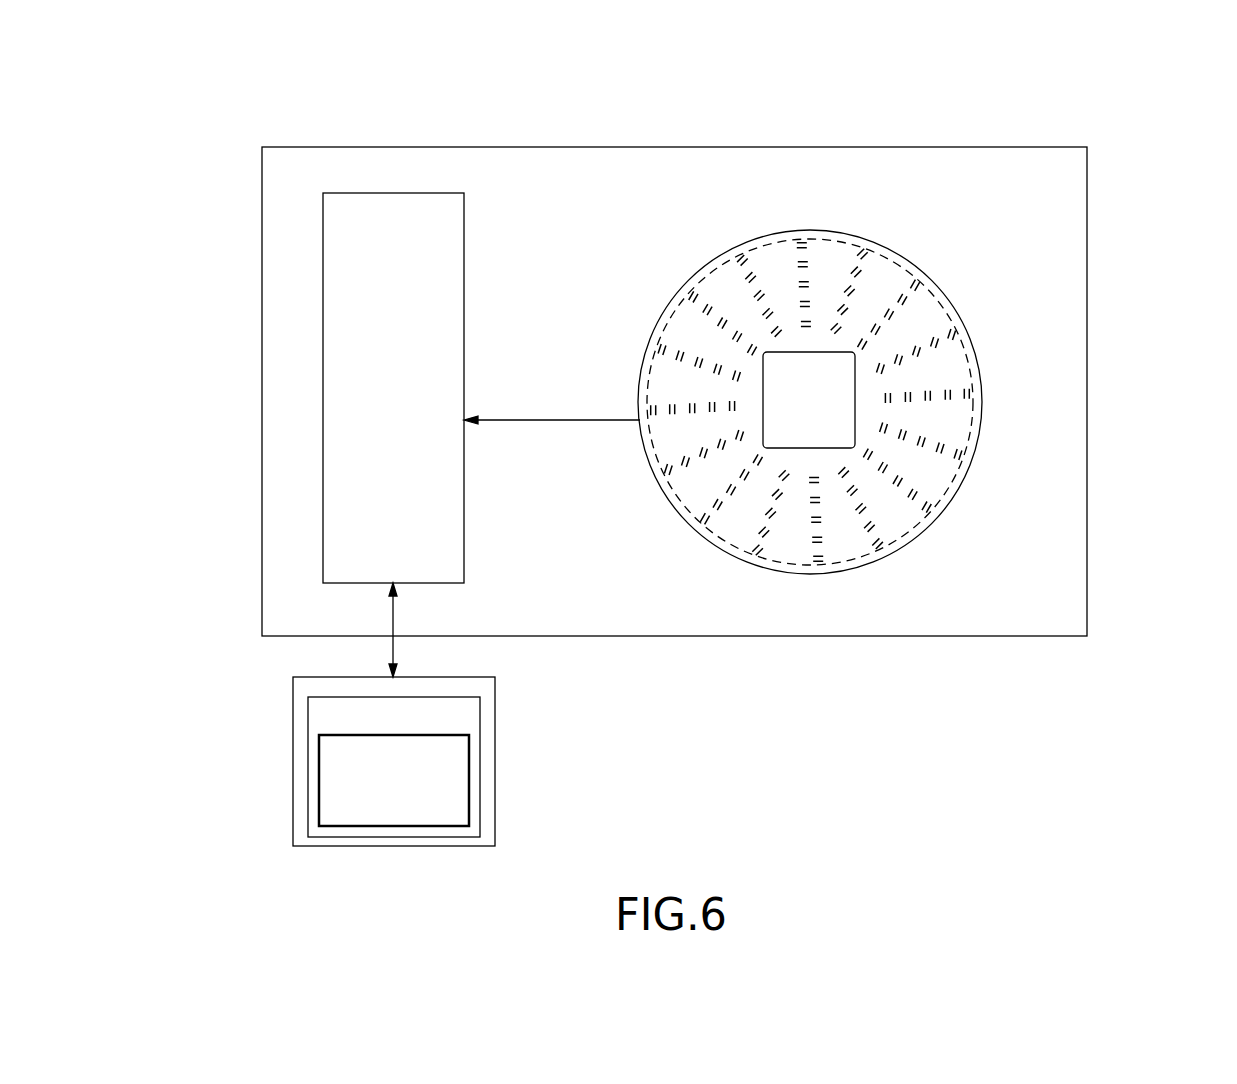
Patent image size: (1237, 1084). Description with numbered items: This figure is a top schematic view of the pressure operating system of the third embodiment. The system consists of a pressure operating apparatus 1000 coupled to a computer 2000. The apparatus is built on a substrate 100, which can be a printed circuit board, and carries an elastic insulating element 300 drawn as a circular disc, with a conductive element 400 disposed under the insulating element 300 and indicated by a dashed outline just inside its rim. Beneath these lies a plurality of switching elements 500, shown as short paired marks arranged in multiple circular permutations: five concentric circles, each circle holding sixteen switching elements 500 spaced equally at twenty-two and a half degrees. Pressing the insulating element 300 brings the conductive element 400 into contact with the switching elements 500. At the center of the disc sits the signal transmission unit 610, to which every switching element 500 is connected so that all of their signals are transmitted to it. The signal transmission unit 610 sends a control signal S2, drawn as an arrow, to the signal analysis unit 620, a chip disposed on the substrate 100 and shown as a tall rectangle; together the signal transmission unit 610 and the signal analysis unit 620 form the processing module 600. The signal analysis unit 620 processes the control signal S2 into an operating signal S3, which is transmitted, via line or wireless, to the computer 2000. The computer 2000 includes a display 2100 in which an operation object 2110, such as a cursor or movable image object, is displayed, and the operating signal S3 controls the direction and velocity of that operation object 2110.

The pressure operating apparatus 1000 is at (741, 357).
The substrate 100 is at (1072, 503).
The insulating element 300 is at (975, 352).
The conductive element 400 is at (972, 407).
The switching elements 500 is at (805, 243).
The processing module 600 is at (322, 388).
The signal transmission unit 610 is at (827, 437).
The signal analysis unit 620 is at (343, 312).
The computer 2000 is at (344, 761).
The display 2100 is at (337, 767).
The operation object 2110 is at (330, 757).
The control signal S2 is at (550, 420).
The operating signal S3 is at (393, 617).